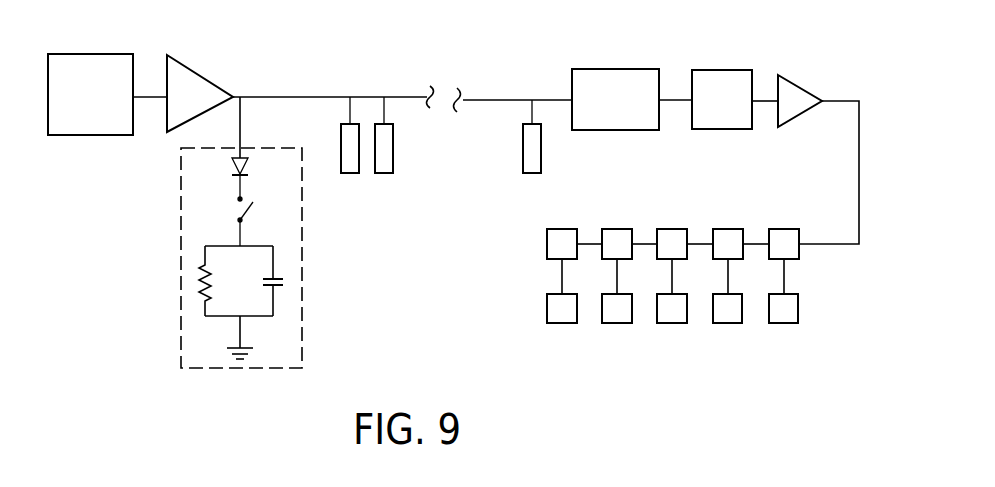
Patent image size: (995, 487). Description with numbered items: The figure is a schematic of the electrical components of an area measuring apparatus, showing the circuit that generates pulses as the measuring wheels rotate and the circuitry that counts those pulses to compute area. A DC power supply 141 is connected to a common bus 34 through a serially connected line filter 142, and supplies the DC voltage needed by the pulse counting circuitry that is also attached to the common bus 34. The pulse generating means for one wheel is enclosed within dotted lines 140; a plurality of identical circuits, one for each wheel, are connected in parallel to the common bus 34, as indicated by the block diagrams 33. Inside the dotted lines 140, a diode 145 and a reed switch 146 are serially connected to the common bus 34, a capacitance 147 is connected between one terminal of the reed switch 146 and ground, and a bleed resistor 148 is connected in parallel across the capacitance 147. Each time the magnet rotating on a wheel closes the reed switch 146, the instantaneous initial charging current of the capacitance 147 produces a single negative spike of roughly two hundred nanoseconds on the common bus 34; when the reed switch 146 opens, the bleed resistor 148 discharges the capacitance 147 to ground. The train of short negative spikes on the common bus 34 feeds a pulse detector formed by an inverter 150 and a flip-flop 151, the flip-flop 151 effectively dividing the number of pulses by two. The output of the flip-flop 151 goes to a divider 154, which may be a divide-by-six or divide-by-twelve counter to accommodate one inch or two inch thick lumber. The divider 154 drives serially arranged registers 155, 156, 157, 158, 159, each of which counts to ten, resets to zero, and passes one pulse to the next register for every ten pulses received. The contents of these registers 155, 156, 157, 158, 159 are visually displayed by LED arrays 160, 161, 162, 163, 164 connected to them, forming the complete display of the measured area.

The DC power supply 141 is at (82, 54).
The line filter 142 is at (187, 68).
The common bus 34 is at (294, 97).
The block diagrams 33 is at (384, 153).
The dotted lines 140 is at (245, 232).
The diode 145 is at (232, 161).
The reed switch 146 is at (236, 210).
The capacitance 147 is at (283, 278).
The bleed resistor 148 is at (200, 288).
The inverter 150 is at (600, 69).
The flip-flop 151 is at (710, 70).
The divider 154 is at (790, 75).
The register 155 is at (785, 240).
The register 156 is at (728, 240).
The register 157 is at (674, 242).
The register 158 is at (617, 240).
The register 159 is at (563, 240).
The LED array 160 is at (785, 320).
The LED array 161 is at (728, 320).
The LED array 162 is at (672, 320).
The LED array 163 is at (617, 320).
The LED array 164 is at (561, 320).